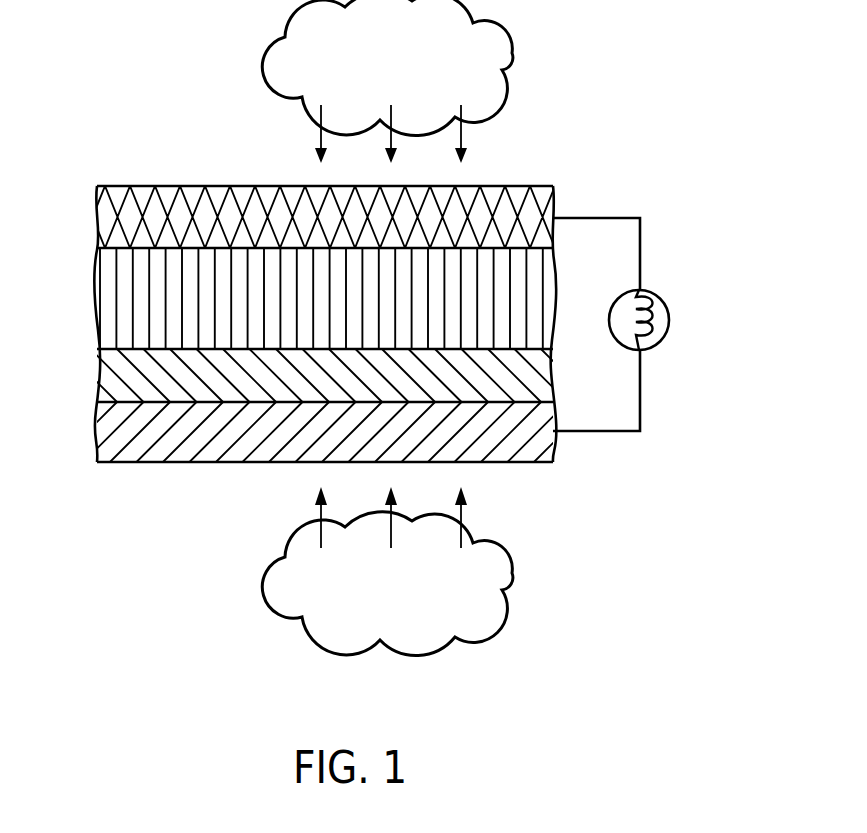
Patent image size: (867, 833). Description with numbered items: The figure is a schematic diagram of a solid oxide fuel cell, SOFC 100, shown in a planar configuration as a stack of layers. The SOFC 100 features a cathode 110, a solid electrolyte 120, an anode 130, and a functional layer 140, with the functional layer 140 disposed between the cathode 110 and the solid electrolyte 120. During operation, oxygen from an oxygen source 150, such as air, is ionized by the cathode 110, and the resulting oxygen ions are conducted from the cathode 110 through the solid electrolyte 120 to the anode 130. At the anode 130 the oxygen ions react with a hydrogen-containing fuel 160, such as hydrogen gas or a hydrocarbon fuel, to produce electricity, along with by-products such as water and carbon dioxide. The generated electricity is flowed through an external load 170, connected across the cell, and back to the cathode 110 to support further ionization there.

The SOFC 100 is at (139, 121).
The cathode 110 is at (108, 424).
The solid electrolyte 120 is at (108, 295).
The anode 130 is at (108, 215).
The functional layer 140 is at (108, 383).
The oxygen source 150 is at (512, 574).
The hydrogen-containing fuel 160 is at (510, 55).
The external load 170 is at (669, 318).